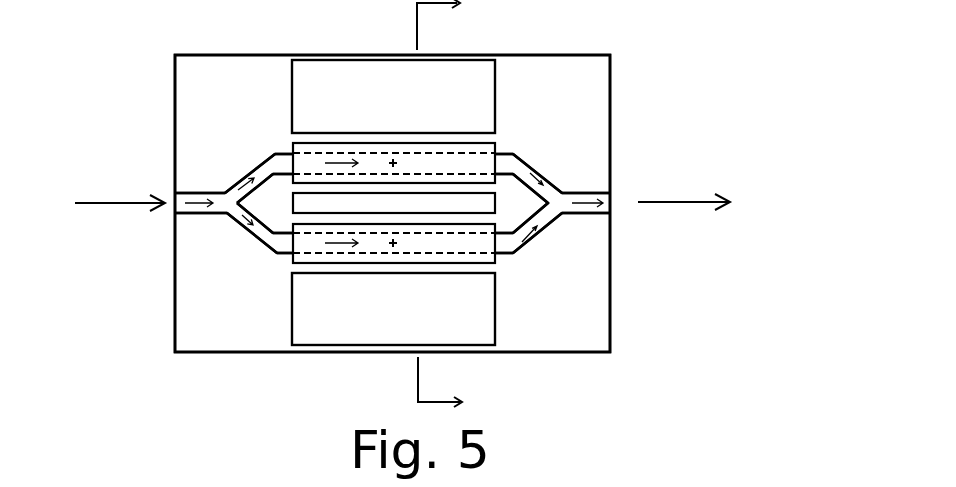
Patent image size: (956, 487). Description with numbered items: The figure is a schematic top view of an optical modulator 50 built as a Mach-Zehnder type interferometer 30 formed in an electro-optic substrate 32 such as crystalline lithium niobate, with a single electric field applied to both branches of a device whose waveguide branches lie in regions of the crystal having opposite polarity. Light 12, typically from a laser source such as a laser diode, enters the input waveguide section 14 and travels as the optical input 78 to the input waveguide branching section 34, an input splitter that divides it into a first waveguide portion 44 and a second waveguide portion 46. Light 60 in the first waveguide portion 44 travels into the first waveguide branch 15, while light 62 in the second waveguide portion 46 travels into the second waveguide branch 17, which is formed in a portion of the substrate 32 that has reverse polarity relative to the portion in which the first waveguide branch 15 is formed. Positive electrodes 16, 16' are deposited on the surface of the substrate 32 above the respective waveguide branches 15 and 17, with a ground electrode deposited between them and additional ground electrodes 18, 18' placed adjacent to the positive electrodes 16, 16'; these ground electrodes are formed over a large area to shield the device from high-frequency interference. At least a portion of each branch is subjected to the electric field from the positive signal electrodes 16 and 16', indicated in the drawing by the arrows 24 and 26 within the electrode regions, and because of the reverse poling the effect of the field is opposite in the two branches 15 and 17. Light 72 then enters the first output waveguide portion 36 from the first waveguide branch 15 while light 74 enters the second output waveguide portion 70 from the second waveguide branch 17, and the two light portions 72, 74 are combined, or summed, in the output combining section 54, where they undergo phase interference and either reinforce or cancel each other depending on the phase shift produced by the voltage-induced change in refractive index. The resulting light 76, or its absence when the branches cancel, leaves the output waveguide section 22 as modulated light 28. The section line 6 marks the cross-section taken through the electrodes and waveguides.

The optical modulator 50 is at (166, 45).
The electro-optic substrate 32 is at (228, 323).
The Mach-Zehnder type interferometer 30 is at (257, 116).
The input waveguide section 14 is at (191, 191).
The input waveguide branching section 34 is at (221, 186).
The light in first waveguide portion 60 is at (233, 187).
The light in second waveguide portion 62 is at (237, 226).
The optical input 78 is at (196, 214).
The first waveguide branch 15 is at (284, 154).
The second waveguide branch 17 is at (287, 254).
The first waveguide portion 44 is at (259, 166).
The second waveguide portion 46 is at (258, 242).
The ground electrode 18 is at (408, 96).
The ground electrode 18' is at (411, 309).
The positive electrode 16 is at (408, 154).
The positive electrode 16' is at (409, 252).
The first electric field direction 24 is at (340, 160).
The second electric field direction 26 is at (335, 245).
The first output waveguide portion 36 is at (525, 169).
The light from first waveguide branch 72 is at (545, 176).
The second output waveguide portion 70 is at (528, 243).
The light from second waveguide branch 74 is at (546, 237).
The output combining section 54 is at (562, 215).
The resulting light 76 is at (591, 194).
The output waveguide section 22 is at (597, 216).
The light 12 is at (105, 208).
The modulated light 28 is at (683, 209).
The section line 6- 6 is at (449, 206).